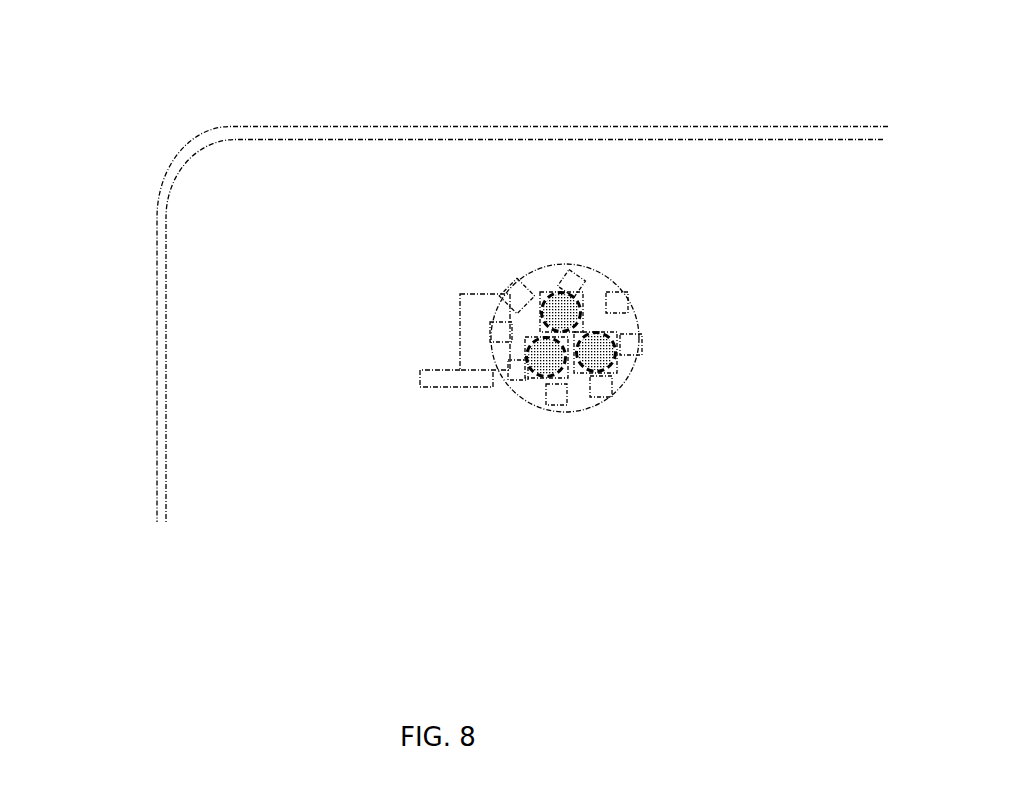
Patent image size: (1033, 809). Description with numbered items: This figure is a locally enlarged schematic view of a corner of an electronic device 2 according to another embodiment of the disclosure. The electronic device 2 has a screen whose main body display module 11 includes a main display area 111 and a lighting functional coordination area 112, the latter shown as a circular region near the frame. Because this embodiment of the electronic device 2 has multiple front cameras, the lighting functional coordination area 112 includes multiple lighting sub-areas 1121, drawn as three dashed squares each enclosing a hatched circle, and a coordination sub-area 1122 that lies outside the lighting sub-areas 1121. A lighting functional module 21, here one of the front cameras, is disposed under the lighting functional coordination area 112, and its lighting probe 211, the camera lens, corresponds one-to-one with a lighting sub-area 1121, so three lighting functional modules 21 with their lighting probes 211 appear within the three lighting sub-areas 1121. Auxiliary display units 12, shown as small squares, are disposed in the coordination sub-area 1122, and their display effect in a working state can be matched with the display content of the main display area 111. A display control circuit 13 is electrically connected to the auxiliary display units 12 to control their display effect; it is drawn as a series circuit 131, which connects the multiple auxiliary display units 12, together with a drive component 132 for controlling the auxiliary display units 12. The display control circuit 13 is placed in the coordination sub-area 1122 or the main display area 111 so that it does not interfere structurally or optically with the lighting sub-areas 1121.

The electronic device 2 is at (139, 92).
The main body display module 11 is at (378, 139).
The main display area 111 is at (275, 212).
The lighting functional coordination area 112 is at (634, 325).
The lighting sub-area 1121 is at (548, 295).
The coordination sub-area 1122 is at (632, 325).
The auxiliary display unit 12 is at (600, 383).
The display control circuit 13 is at (80, 405).
The series circuit 131 is at (460, 325).
The drive component 132 is at (420, 370).
The lighting functional module 21 is at (553, 293).
The lighting probe 211 is at (546, 357).